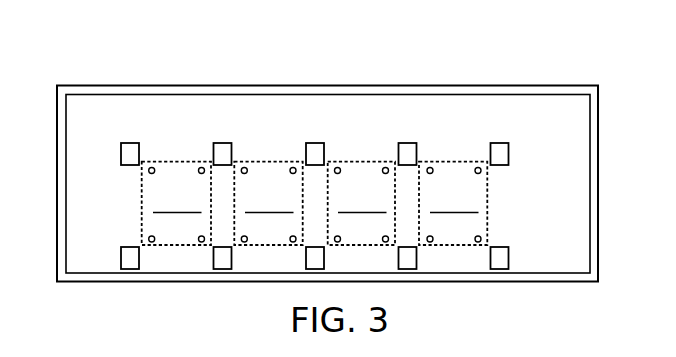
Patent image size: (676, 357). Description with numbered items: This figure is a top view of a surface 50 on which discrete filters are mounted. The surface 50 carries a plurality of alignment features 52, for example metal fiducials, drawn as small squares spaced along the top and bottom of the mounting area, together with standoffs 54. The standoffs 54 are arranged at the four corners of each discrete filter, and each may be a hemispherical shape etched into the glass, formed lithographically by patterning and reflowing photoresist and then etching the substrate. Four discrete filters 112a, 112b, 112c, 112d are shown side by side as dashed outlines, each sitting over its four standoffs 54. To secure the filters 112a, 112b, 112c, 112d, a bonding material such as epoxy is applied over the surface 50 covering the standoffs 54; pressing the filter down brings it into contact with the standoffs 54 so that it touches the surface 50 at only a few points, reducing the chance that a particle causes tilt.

The surface 50 is at (405, 182).
The alignment features 52 is at (234, 138).
The standoffs 54 is at (485, 175).
The discrete filter 112a is at (176, 203).
The discrete filter 112b is at (268, 203).
The discrete filter 112c is at (361, 203).
The discrete filter 112d is at (453, 203).